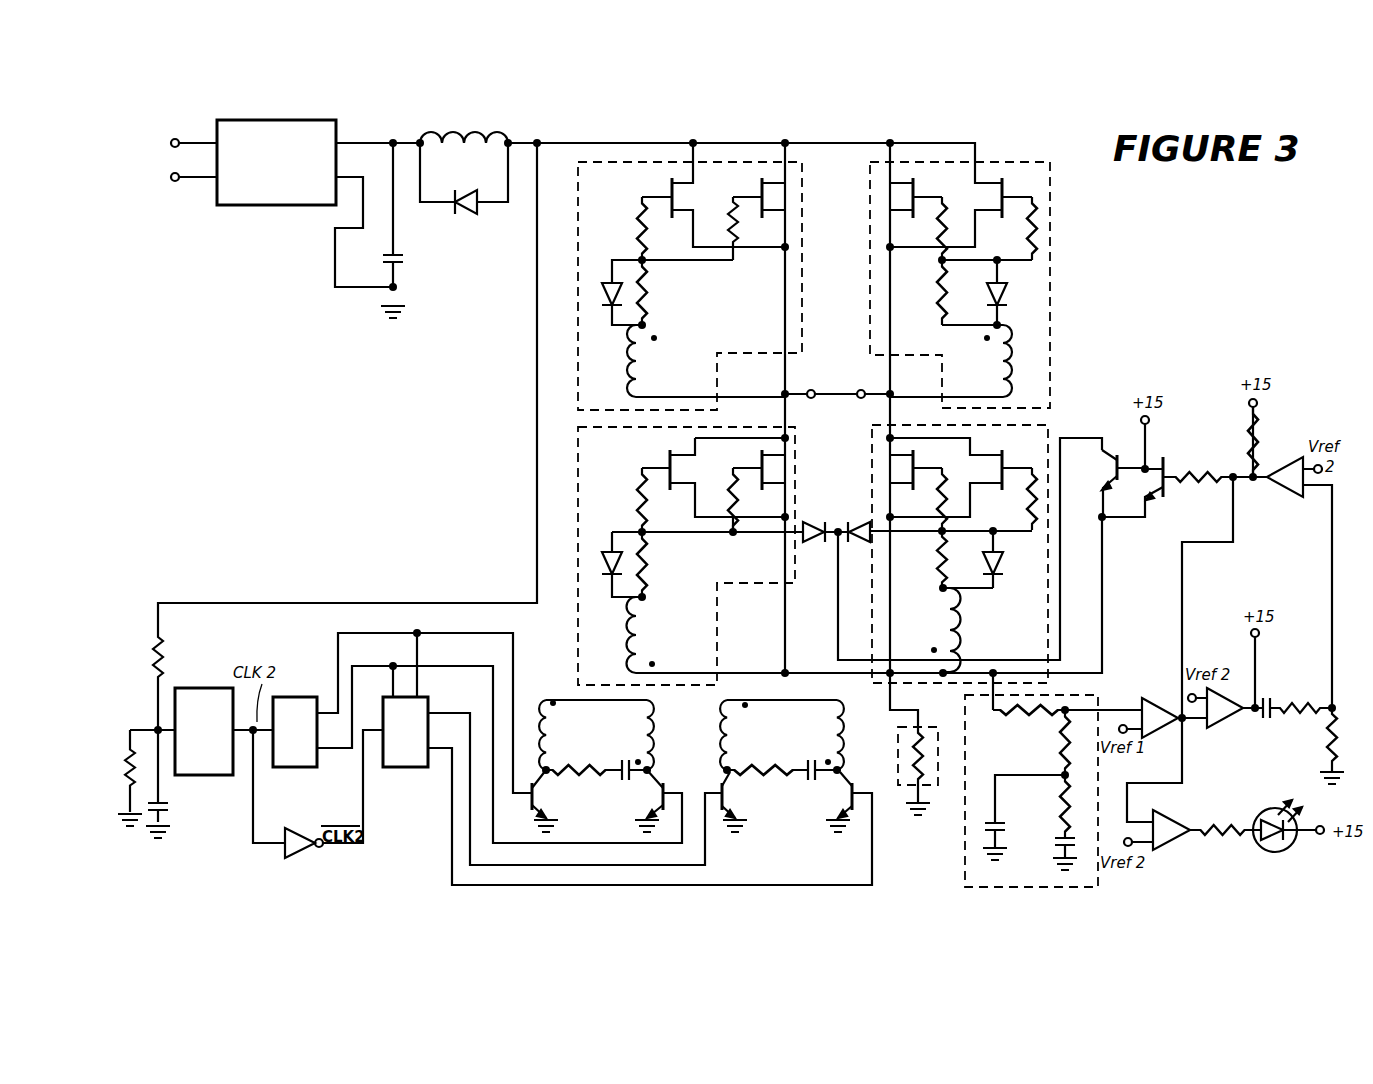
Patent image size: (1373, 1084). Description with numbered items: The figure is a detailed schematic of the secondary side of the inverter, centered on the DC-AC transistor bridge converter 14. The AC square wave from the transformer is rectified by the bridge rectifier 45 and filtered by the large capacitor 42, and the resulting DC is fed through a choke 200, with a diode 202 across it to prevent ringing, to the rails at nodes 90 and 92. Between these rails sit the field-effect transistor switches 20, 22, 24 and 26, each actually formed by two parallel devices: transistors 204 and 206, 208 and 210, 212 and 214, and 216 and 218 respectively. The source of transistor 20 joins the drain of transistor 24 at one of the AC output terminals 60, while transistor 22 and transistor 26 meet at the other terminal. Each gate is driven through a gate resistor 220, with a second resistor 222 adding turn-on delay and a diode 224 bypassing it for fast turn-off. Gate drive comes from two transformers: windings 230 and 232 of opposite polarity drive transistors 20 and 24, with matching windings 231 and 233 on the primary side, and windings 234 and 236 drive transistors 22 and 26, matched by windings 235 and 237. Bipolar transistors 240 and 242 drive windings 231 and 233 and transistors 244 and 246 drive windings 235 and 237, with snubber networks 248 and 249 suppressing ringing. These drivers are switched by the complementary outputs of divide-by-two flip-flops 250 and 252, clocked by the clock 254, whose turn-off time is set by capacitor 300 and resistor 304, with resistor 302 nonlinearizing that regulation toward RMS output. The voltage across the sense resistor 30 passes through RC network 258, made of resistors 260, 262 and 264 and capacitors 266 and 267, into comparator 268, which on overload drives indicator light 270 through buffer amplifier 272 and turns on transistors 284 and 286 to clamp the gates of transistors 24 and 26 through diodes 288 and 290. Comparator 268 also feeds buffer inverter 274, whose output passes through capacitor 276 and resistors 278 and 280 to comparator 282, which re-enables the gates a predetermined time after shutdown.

The bridge converter 14 is at (1161, 264).
The field-effect transistor 20 is at (707, 349).
The field-effect transistor 22 is at (1034, 331).
The field-effect transistor 24 is at (702, 635).
The field-effect transistor 26 is at (1034, 631).
The sense resistor 30 is at (926, 755).
The capacitor 42 is at (396, 256).
The bridge rectifier 45 is at (289, 189).
The AC output terminals 60 is at (846, 375).
The node 90 is at (696, 141).
The node 92 is at (784, 671).
The choke 200 is at (505, 138).
The diode 202 is at (468, 212).
The field-effect transistor 204 is at (668, 190).
The field-effect transistor 206 is at (758, 190).
The field-effect transistor 208 is at (915, 190).
The field-effect transistor 210 is at (1006, 190).
The field-effect transistor 212 is at (667, 462).
The field-effect transistor 214 is at (758, 462).
The field-effect transistor 216 is at (916, 463).
The field-effect transistor 218 is at (1005, 460).
The gate resistor 220 is at (640, 216).
The second resistor 222 is at (646, 290).
The diode 224 is at (611, 281).
The winding 230 is at (633, 352).
The winding 231 is at (553, 738).
The second winding 232 is at (632, 632).
The winding 233 is at (657, 728).
The winding 234 is at (1010, 370).
The winding 235 is at (724, 722).
The second winding 236 is at (955, 612).
The winding 237 is at (840, 728).
The bipolar transistor 240 is at (548, 796).
The bipolar transistor 242 is at (652, 806).
The transistor 244 is at (735, 796).
The transistor 246 is at (840, 806).
The snubber circuit 248 is at (620, 766).
The snubber circuit 249 is at (773, 768).
The flip-flop 250 is at (303, 695).
The flip-flop 252 is at (406, 768).
The clock 254 is at (212, 690).
The RC network 258 is at (965, 840).
The resistor 260 is at (1029, 724).
The resistor 262 is at (1060, 754).
The resistor 264 is at (1060, 789).
The capacitor 266 is at (998, 826).
The capacitor 267 is at (1055, 848).
The comparator 268 is at (1160, 700).
The overload shutdown indicator light 270 is at (1268, 848).
The buffer amplifier 272 is at (1178, 822).
The buffer inverter 274 is at (1232, 728).
The capacitor 276 is at (1275, 702).
The resistor 278 is at (1292, 722).
The resistor 280 is at (1328, 755).
The comparator 282 is at (1298, 462).
The transistor 284 is at (1165, 456).
The transistor 286 is at (1115, 474).
The diode 288 is at (837, 545).
The diode 290 is at (852, 520).
The capacitor 300 is at (170, 810).
The resistor 302 is at (150, 785).
The resistor 304 is at (166, 650).